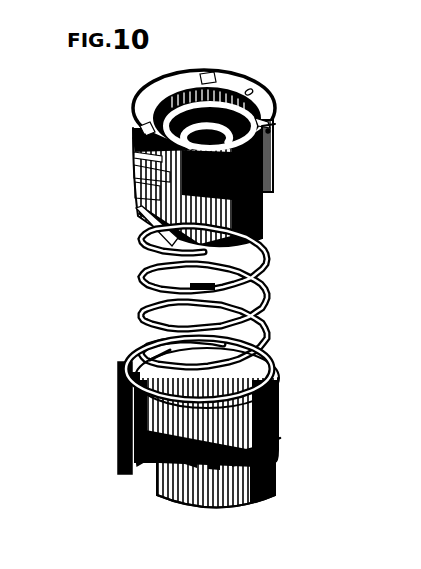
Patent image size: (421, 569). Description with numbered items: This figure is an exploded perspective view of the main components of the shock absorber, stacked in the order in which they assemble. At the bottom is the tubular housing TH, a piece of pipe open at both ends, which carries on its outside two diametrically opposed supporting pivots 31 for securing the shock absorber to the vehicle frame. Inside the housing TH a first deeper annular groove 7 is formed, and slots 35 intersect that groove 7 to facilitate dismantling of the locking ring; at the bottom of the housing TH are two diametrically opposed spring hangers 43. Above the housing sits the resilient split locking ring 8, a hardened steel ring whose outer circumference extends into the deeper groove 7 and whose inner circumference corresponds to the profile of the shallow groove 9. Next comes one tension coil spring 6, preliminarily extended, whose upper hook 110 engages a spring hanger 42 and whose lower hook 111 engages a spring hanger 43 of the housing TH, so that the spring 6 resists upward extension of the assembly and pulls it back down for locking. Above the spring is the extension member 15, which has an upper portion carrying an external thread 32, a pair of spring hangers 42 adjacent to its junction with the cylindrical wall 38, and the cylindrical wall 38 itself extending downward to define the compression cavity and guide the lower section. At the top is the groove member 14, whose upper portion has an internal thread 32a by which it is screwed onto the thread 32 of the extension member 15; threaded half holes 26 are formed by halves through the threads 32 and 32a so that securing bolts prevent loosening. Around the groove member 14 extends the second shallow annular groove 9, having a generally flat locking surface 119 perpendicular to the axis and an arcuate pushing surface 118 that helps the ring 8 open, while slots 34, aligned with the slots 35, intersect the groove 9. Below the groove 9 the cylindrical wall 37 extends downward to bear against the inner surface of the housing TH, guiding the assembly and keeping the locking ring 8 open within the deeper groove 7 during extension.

The groove member 14 is at (271, 165).
The extension member 15 is at (256, 212).
The tension coil spring 6 is at (268, 294).
The first deeper annular groove 7 is at (122, 412).
The resilient split locking ring 8 is at (268, 348).
The second shallow annular groove 9 is at (134, 156).
The threaded half holes 26 is at (249, 91).
The supporting pivots 31 is at (180, 490).
The external thread 32 is at (134, 176).
The internal thread 32a is at (205, 80).
The slots 34 is at (135, 142).
The slots 35 is at (270, 440).
The cylindrical wall 37 is at (140, 192).
The cylindrical wall 38 is at (160, 228).
The spring hangers 42 is at (263, 202).
The spring hangers 43 is at (138, 462).
The upper hooks 110 is at (143, 292).
The lower hooks 111 is at (150, 358).
The arcuate pushing surface 118 is at (142, 128).
The flat locking surface 119 is at (270, 125).
The tubular housing TH is at (128, 378).